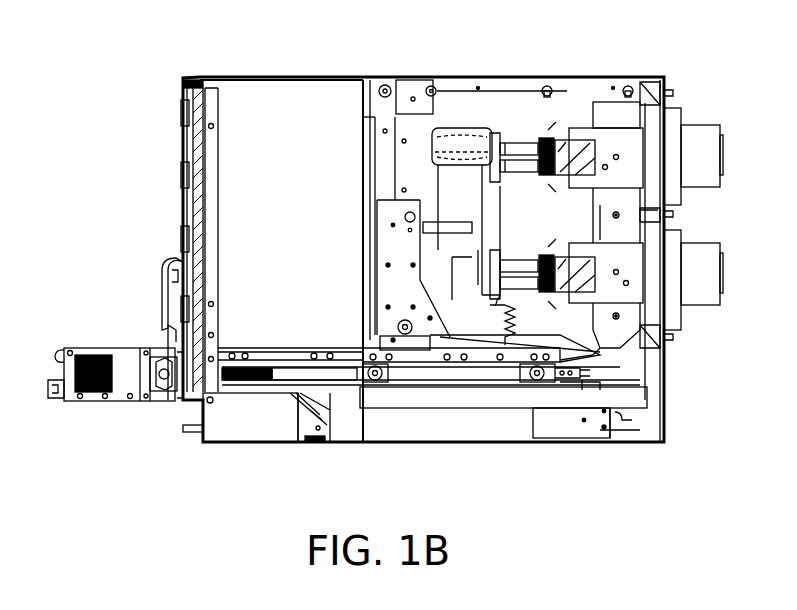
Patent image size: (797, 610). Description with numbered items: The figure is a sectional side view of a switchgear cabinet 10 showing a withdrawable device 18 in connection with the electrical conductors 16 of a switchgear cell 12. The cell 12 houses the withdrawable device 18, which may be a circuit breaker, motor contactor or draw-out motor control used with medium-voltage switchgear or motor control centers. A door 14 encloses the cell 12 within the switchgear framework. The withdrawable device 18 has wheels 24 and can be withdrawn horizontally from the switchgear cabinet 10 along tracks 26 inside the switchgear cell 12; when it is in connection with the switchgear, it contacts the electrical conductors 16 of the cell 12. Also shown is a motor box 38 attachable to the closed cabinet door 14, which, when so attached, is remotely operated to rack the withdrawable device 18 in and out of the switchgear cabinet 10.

The switchgear cabinet 10 is at (402, 52).
The cell 12 is at (580, 95).
The door 14 is at (172, 178).
The electrical conductors 16 is at (585, 158).
The withdrawable device 18 is at (491, 197).
The wheels 24 is at (388, 380).
The tracks 26 is at (455, 373).
The motor box 38 is at (124, 360).